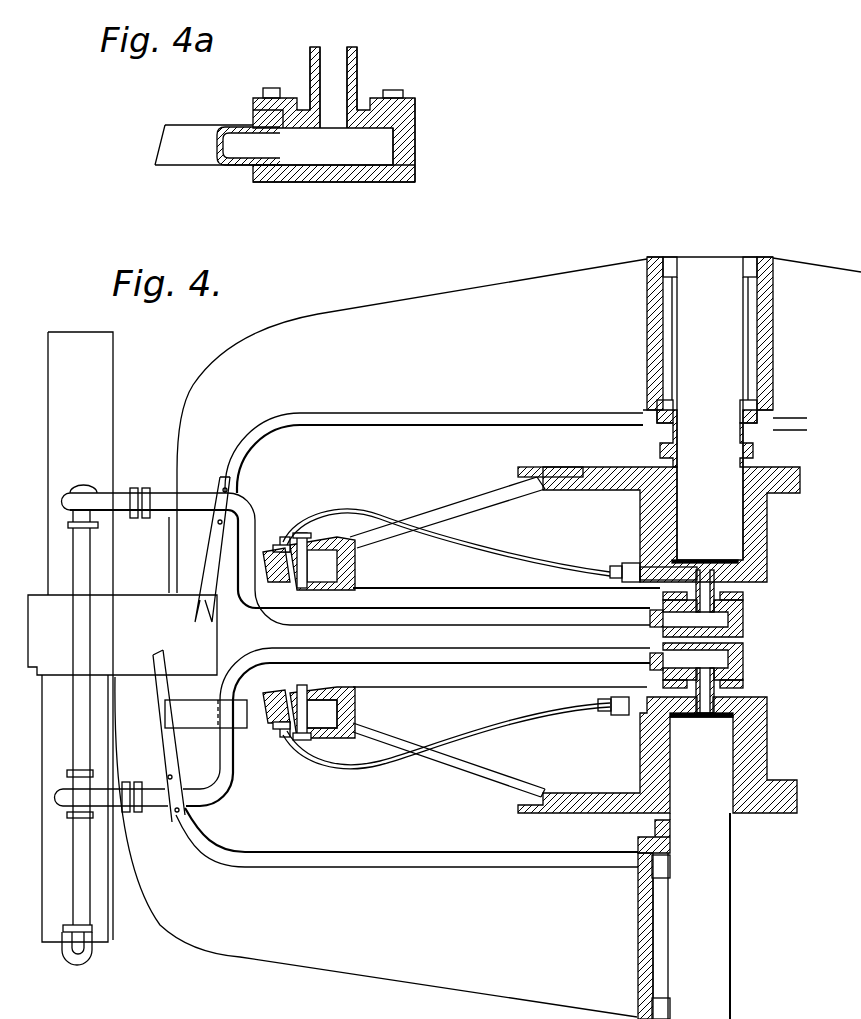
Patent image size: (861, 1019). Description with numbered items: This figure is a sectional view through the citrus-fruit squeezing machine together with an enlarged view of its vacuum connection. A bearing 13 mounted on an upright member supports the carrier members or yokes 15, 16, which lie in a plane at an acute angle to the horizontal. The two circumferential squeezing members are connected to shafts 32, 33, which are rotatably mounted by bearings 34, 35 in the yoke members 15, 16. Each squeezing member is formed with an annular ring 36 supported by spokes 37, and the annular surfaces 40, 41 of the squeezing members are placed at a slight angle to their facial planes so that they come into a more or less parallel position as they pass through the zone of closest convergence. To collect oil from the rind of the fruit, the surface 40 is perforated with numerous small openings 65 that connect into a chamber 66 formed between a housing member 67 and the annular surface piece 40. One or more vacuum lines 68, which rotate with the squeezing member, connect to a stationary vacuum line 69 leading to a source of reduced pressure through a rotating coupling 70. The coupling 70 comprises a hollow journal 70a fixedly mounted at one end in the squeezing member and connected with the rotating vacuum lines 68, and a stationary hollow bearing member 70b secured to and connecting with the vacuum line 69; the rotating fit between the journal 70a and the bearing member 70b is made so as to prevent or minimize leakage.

In FIG. 4, the bearing 13 is at (64, 644).
In FIG. 4, the yoke 15 is at (232, 943).
In FIG. 4, the yoke 16 is at (193, 550).
In FIG. 4, the shaft 32 is at (720, 873).
In FIG. 4, the shaft 33 is at (687, 354).
In FIG. 4, the bearing 34 is at (660, 897).
In FIG. 4, the bearing 35 is at (670, 305).
In FIG. 4, the annular ring 36 is at (355, 708).
In FIG. 4, the spokes 37 is at (510, 767).
In FIG. 4, the annular surface 40 is at (335, 688).
In FIG. 4, the annular surface 41 is at (312, 593).
In FIG. 4, the openings 65 is at (290, 692).
In FIG. 4, the chamber 66 is at (328, 742).
In FIG. 4, the housing member 67 is at (290, 738).
In FIG. 4, the vacuum line 68 is at (472, 732).
In FIG. 4A, the stationary vacuum line 69 is at (207, 127).
In FIG. 4, the stationary vacuum line 69 is at (568, 655).
In FIG. 4A, the rotating coupling 70 is at (367, 114).
In FIG. 4, the rotating coupling 70 is at (745, 612).
In FIG. 4A, the hollow journal 70a is at (353, 83).
In FIG. 4A, the hollow bearing member 70b is at (413, 160).